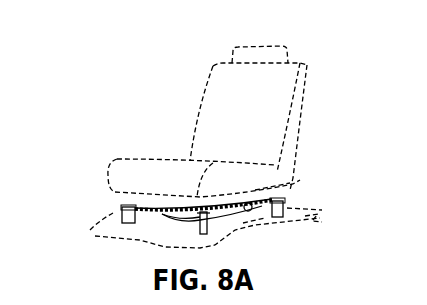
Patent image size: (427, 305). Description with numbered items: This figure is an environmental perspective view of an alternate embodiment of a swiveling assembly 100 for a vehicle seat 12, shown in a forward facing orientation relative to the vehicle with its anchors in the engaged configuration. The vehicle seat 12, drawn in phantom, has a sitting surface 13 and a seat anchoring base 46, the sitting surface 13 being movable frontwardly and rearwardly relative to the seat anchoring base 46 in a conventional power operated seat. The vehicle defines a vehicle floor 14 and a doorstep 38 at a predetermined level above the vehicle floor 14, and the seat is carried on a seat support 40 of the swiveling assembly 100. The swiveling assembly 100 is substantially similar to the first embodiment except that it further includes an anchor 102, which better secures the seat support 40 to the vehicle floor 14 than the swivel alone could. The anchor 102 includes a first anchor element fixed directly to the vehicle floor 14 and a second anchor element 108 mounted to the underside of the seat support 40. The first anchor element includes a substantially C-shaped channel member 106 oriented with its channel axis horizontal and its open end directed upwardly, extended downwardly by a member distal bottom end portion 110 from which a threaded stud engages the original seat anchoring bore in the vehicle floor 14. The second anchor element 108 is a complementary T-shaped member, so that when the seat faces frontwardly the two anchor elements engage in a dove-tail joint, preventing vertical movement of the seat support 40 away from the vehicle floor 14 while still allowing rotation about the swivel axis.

The swiveling assembly 100 is at (101, 107).
The vehicle seat 12 is at (302, 107).
The sitting surface 13 is at (170, 158).
The vehicle floor 14 is at (134, 240).
The doorstep 38 is at (322, 224).
The seat support 40 is at (258, 204).
The seat anchoring base 46 is at (292, 187).
The anchor 102 is at (118, 210).
The C-shaped channel member 106 is at (117, 207).
The second anchor element 108 is at (126, 207).
The member distal bottom end portion 110 is at (121, 219).